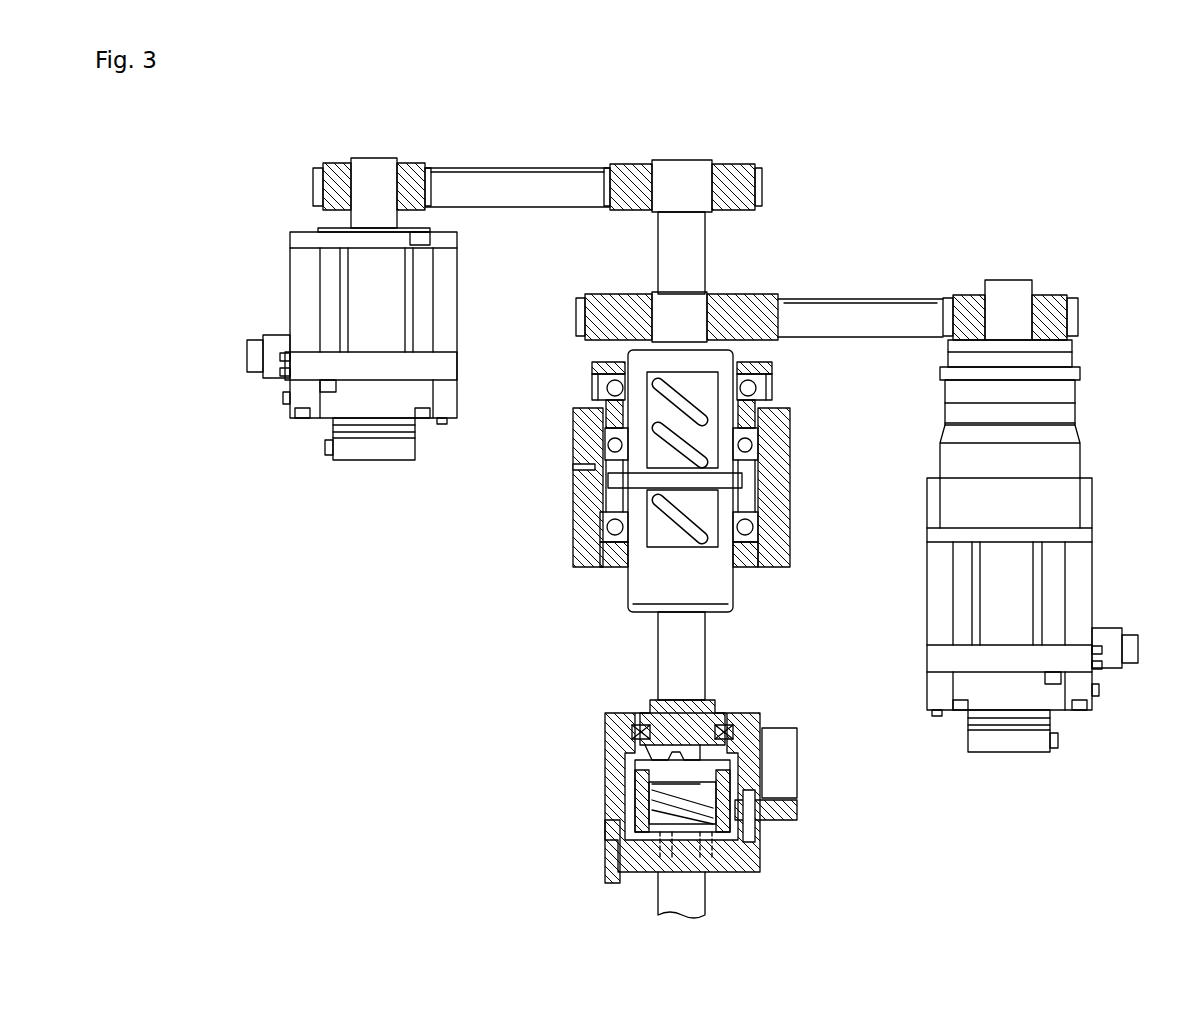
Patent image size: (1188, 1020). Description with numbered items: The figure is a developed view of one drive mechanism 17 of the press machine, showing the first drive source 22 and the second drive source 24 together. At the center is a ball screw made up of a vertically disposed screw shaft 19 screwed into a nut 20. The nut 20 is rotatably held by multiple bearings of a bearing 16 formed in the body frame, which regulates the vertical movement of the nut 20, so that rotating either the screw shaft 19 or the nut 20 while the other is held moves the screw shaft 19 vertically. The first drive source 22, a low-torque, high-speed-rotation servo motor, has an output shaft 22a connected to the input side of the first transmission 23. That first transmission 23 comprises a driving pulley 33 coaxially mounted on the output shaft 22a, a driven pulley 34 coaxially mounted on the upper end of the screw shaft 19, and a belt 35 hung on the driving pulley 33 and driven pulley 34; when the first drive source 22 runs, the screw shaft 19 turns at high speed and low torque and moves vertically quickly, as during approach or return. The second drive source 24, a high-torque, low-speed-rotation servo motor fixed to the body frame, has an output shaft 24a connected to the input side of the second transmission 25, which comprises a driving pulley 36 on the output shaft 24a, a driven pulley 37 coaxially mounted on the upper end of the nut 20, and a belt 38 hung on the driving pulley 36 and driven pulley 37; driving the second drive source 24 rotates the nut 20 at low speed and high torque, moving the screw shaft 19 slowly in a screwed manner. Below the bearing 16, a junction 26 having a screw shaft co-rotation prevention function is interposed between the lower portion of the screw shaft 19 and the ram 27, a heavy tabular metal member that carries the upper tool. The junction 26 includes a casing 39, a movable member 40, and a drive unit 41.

The bearing 16 is at (573, 520).
The drive mechanism 17 is at (802, 182).
The screw shaft 19 is at (706, 273).
The nut 20 is at (638, 596).
The first drive source 22 is at (290, 296).
The output shaft 22a is at (373, 160).
The first transmission 23 is at (496, 211).
The second drive source 24 is at (1092, 551).
The output shaft 24a is at (1010, 284).
The second transmission 25 is at (888, 298).
The junction 26 is at (600, 740).
The ram 27 is at (705, 900).
The driving pulley 33 is at (343, 172).
The driven pulley 34 is at (740, 208).
The belt 35 is at (537, 206).
The driving pulley 36 is at (1052, 300).
The driven pulley 37 is at (617, 296).
The belt 38 is at (848, 310).
The casing 39 is at (612, 715).
The movable member 40 is at (622, 786).
The drive unit 41 is at (798, 765).